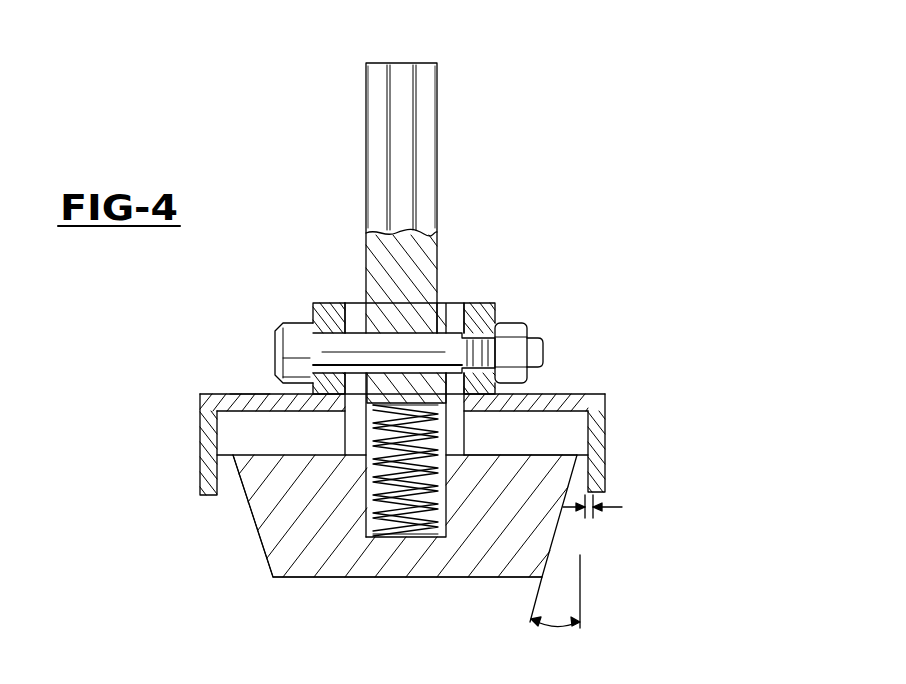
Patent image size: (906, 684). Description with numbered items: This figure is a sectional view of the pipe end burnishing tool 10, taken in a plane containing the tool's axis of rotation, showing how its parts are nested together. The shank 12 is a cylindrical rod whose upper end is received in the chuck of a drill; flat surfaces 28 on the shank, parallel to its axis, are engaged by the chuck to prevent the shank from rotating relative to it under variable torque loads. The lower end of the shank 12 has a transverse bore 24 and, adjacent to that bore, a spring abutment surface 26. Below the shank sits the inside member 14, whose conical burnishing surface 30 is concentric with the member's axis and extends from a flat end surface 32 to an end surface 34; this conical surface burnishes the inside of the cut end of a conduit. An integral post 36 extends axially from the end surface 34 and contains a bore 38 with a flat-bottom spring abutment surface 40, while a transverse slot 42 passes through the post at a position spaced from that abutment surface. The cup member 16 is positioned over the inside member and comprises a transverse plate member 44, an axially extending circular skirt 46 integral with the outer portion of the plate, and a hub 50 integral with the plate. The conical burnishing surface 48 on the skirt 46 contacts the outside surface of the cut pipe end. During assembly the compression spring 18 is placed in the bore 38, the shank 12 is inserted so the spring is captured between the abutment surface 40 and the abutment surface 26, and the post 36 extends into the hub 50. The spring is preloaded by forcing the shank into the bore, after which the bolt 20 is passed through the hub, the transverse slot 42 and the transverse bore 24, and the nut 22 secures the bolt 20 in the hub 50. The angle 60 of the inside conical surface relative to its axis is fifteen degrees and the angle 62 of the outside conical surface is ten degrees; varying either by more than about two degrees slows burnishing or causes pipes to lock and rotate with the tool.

The burnishing tool 10 is at (697, 297).
The shank 12 is at (401, 62).
The inside member 14 is at (295, 579).
The cup member 16 is at (605, 430).
The compression spring 18 is at (450, 487).
The bolt 20 is at (300, 324).
The nut 22 is at (507, 320).
The transverse bore 24 is at (438, 270).
The spring abutment surface 26 is at (200, 395).
The flat surfaces 28 is at (423, 124).
The conical burnishing surface 30 is at (256, 540).
The flat end surface 32 is at (382, 579).
The end surface 34 is at (550, 453).
The post 36 is at (452, 303).
The bore 38 is at (367, 508).
The spring abutment surface 40 is at (370, 530).
The transverse slot 42 is at (460, 425).
The plate member 44 is at (245, 394).
The circular skirt 46 is at (198, 428).
The conical burnishing surface 48 is at (217, 458).
The hub 50 is at (311, 307).
The angle 60 is at (555, 622).
The angle 62 is at (622, 507).